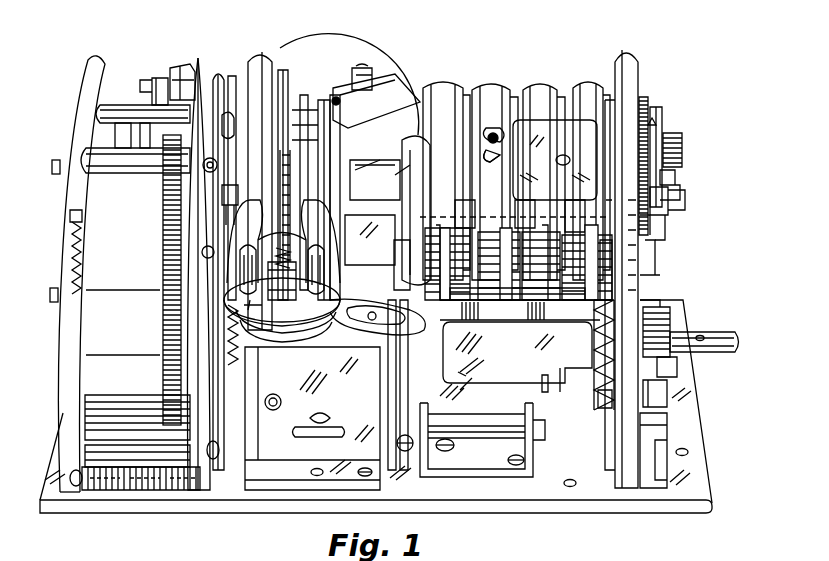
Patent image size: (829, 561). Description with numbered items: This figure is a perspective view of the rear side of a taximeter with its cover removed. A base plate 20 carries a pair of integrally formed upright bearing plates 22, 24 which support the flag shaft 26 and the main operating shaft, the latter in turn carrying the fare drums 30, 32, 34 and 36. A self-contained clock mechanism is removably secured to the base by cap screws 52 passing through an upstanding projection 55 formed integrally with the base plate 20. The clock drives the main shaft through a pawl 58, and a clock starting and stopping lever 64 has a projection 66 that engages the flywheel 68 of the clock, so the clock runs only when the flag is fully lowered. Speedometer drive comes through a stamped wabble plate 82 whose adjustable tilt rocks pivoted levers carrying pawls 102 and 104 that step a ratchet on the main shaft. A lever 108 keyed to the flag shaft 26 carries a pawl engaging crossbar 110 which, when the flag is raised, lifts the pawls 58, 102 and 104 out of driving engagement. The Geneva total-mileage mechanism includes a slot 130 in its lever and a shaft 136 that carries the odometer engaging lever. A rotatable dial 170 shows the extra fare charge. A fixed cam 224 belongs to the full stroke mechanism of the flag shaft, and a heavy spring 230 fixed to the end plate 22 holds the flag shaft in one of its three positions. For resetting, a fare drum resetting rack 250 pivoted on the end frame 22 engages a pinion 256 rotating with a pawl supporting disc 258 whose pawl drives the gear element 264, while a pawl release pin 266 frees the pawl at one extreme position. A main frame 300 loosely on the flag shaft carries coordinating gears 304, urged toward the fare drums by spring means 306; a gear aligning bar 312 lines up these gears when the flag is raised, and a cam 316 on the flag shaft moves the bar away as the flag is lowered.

The base plate 20 is at (700, 465).
The upright bearing plate 22 is at (640, 64).
The upright bearing plate 24 is at (258, 58).
The flag shaft 26 is at (728, 340).
The fare drum 30 is at (444, 84).
The fare drum 32 is at (489, 84).
The fare drum 34 is at (532, 84).
The fare drum 36 is at (586, 84).
The removable cap screw 52 is at (145, 482).
The upstanding projection 55 is at (115, 480).
The pawl 58 is at (231, 80).
The clock starting and stopping lever 64 is at (222, 76).
The projection 66 is at (181, 68).
The flywheel 68 is at (155, 96).
The wabble plate 82 is at (324, 257).
The pawl 102 is at (280, 70).
The pawl 104 is at (304, 95).
The lever 108 is at (330, 108).
The pawl engaging crossbar 110 is at (318, 46).
The slot 130 is at (480, 462).
The shaft 136 is at (468, 425).
The rotatable dial 170 is at (385, 84).
The fixed cam 224 is at (660, 435).
The heavy spring 230 is at (596, 385).
The fare drum resetting rack 250 is at (681, 178).
The pinion 256 is at (683, 142).
The pawl supporting disc 258 is at (663, 121).
The gear element 264 is at (649, 104).
The pawl release pin 266 is at (666, 212).
The main frame 300 is at (548, 385).
The coordinating gear 304 is at (570, 210).
The spring means 306 is at (466, 345).
The gear aligning bar 312 is at (498, 296).
The cam 316 is at (502, 322).